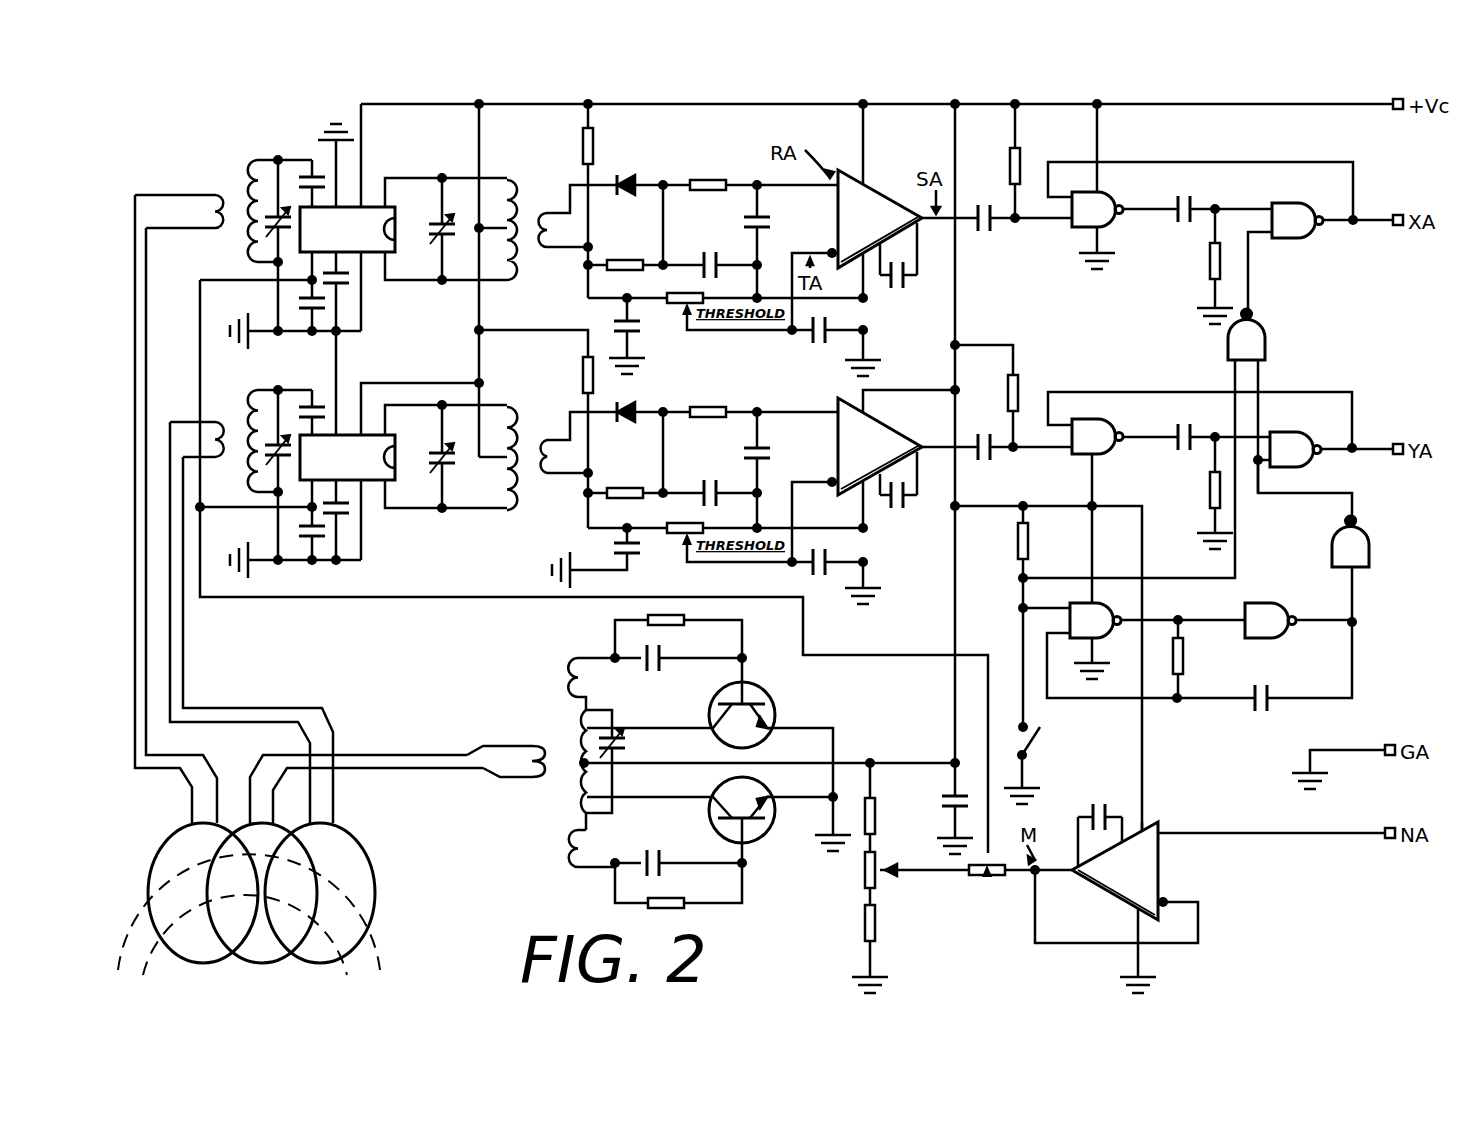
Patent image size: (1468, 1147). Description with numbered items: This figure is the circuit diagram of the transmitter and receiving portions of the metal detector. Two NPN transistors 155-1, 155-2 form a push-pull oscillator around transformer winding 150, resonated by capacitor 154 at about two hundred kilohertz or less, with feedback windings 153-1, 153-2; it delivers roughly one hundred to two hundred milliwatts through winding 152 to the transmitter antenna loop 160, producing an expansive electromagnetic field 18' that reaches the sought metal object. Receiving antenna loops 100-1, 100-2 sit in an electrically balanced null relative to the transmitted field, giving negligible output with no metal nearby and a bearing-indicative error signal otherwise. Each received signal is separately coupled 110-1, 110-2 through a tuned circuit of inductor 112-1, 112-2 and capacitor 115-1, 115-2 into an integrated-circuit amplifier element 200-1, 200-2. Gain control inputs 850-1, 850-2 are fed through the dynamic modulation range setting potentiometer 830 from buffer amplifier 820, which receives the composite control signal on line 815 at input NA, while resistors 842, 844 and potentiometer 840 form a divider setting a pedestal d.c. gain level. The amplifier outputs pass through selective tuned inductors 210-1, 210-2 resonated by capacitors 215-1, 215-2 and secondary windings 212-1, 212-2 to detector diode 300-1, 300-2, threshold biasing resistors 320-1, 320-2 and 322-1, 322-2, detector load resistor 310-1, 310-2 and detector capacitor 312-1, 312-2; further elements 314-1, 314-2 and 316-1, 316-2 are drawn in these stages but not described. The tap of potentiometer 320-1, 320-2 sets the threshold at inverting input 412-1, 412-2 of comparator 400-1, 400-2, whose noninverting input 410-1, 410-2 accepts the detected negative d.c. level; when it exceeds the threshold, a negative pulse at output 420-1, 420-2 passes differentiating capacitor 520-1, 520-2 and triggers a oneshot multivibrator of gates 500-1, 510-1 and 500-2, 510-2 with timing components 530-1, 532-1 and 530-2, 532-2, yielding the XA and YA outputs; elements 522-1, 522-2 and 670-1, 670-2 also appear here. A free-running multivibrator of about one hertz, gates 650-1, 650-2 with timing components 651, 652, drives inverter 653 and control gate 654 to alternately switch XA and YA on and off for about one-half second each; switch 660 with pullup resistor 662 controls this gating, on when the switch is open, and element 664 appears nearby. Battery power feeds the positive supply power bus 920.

The input coupling 110-1 is at (215, 196).
The input coupling 110-2 is at (218, 420).
The inductor 112-1 is at (258, 200).
The inductor 112-2 is at (258, 435).
The capacitor 115-1 is at (285, 215).
The capacitor 115-2 is at (288, 440).
The amplifier element 200-1 is at (372, 255).
The amplifier element 200-2 is at (372, 485).
The selective tuned inductor 210-1 is at (512, 200).
The selective tuned inductor 210-2 is at (510, 430).
The secondary winding 212-1 is at (548, 220).
The secondary winding 212-2 is at (548, 440).
The capacitor 215-1 is at (440, 215).
The capacitor 215-2 is at (440, 445).
The detector diode 300-1 is at (648, 158).
The detector diode 300-2 is at (630, 405).
The detector load resistor 310-1 is at (625, 260).
The detector load resistor 310-2 is at (625, 488).
The detector capacitor 312-1 is at (705, 260).
The detector capacitor 312-2 is at (705, 488).
The resistor 314-1 is at (710, 180).
The resistor 314-2 is at (710, 407).
The capacitor 316-1 is at (744, 217).
The capacitor 316-2 is at (744, 447).
The threshold biasing potentiometer 320-1 is at (685, 312).
The threshold biasing potentiometer 320-2 is at (680, 542).
The threshold biasing network resistor 322-1 is at (595, 150).
The threshold biasing network resistor 322-2 is at (596, 345).
The operational amplifier comparator 400-1 is at (885, 200).
The operational amplifier comparator 400-2 is at (885, 440).
The noninverting input 410-1 is at (828, 188).
The noninverting input 410-2 is at (780, 393).
The inverting input 412-1 is at (788, 241).
The inverting input 412-2 is at (820, 482).
The comparator output 420-1 is at (945, 225).
The comparator output 420-2 is at (945, 455).
The gate 500-1 is at (1102, 205).
The gate 500-2 is at (1098, 428).
The gate 510-1 is at (1300, 235).
The gate 510-2 is at (1312, 410).
The differentiating capacitor 520-1 is at (990, 236).
The differentiating capacitor 520-2 is at (990, 462).
The pull-up resistor 522-1 is at (1022, 160).
The pull-up resistor 522-2 is at (1020, 380).
The timing component 530-1 is at (1195, 203).
The timing component 530-2 is at (1190, 446).
The timing component 532-1 is at (1212, 270).
The timing component 532-2 is at (1210, 490).
The gate 650-1 is at (1100, 615).
The gate 650-2 is at (1272, 618).
The timing component 651 is at (1183, 650).
The timing component 652 is at (1272, 690).
The inverter 653 is at (1370, 543).
The control gate 654 is at (1270, 342).
The switch 660 is at (1033, 742).
The pullup resistor 662 is at (1018, 548).
The line 664 is at (1020, 610).
The gate input line 670-1 is at (1255, 282).
The gate input line 670-2 is at (1330, 492).
The line 815 is at (1278, 831).
The buffer amplifier 820 is at (1135, 865).
The dynamic modulation range setting potentiometer 830 is at (985, 885).
The potentiometer 840 is at (880, 890).
The resistor 842 is at (877, 815).
The resistor 844 is at (878, 935).
The gain control input 850-1 is at (305, 292).
The gain control input 850-2 is at (305, 520).
The power bus 920 is at (1190, 104).
The transformer winding 150 is at (560, 738).
The winding 152 is at (515, 778).
The feedback winding 153-1 is at (562, 665).
The feedback winding 153-2 is at (562, 850).
The capacitor 154 is at (625, 738).
The NPN transistor 155-1 is at (818, 700).
The NPN transistor 155-2 is at (770, 828).
The transmitter antenna loop 160 is at (248, 823).
The receiving antenna loop 100-1 is at (155, 862).
The receiving antenna loop 100-2 is at (355, 832).
The electromagnetic field 18' is at (279, 914).